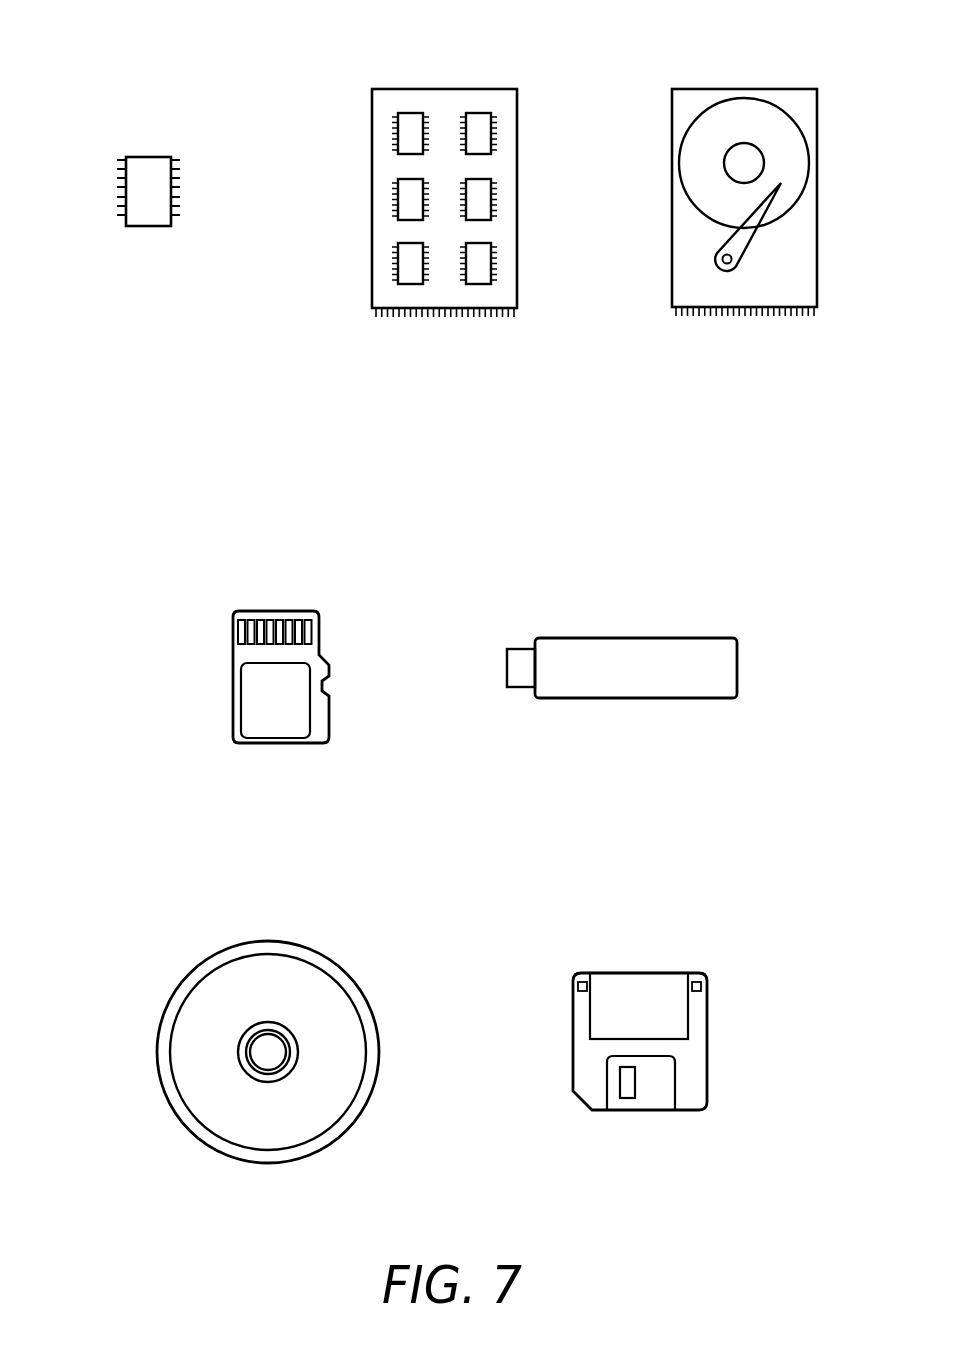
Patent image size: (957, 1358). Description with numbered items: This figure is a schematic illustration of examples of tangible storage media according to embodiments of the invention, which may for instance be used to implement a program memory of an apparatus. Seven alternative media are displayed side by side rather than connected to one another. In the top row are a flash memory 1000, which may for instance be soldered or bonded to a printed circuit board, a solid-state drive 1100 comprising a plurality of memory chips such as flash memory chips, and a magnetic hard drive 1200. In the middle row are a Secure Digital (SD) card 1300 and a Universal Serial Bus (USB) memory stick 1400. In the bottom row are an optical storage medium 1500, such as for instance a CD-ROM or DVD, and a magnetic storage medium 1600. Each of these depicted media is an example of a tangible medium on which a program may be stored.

The flash memory 1000 is at (170, 128).
The solid-state drive 1100 is at (495, 64).
The magnetic hard drive 1200 is at (796, 64).
The Secure Digital (SD) card 1300 is at (302, 582).
The Universal Serial Bus (USB) memory stick 1400 is at (714, 612).
The optical storage medium 1500 is at (322, 925).
The magnetic storage medium 1600 is at (679, 946).